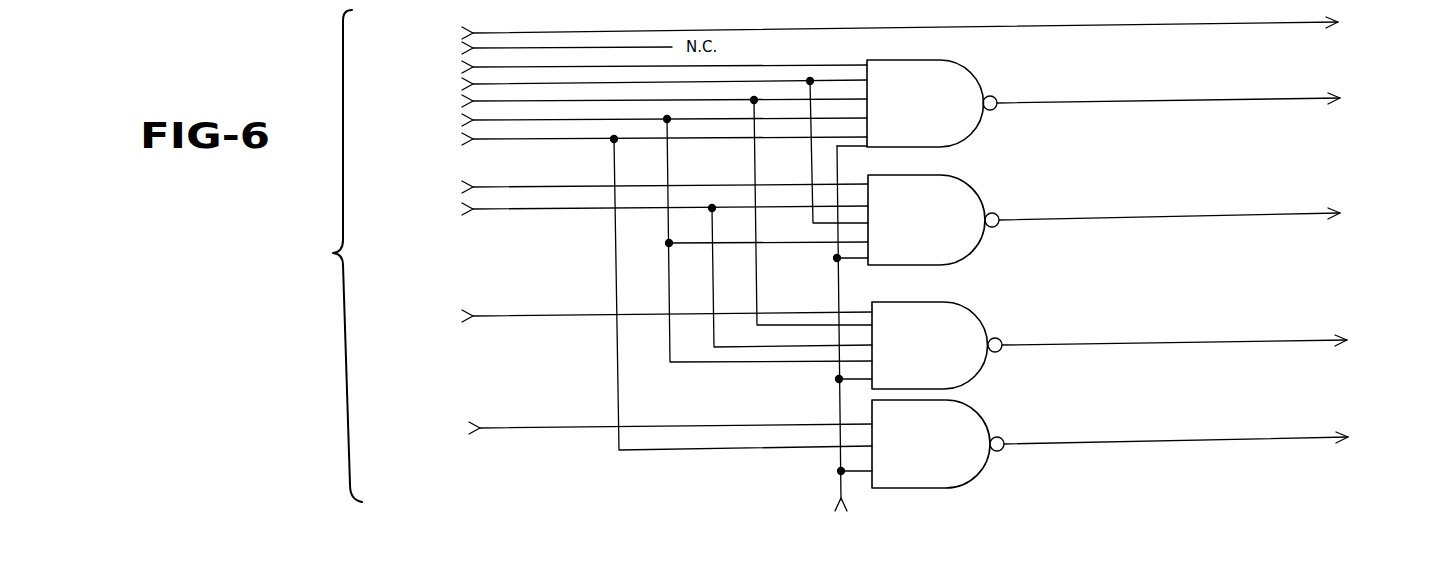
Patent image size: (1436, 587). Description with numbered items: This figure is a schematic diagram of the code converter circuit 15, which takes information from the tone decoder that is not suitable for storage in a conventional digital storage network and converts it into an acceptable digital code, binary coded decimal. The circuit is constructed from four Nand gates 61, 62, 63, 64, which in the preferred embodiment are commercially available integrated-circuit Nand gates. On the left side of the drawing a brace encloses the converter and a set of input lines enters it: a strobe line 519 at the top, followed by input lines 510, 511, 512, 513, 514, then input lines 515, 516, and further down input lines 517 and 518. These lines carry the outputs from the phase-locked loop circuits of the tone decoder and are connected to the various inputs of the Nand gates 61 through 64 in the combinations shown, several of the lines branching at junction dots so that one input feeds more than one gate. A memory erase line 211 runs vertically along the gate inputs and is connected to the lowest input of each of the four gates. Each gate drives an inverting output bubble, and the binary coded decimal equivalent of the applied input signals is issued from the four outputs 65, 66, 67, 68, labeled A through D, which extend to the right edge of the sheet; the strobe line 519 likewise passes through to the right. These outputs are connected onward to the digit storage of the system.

The code converter circuit 15 is at (267, 256).
The strobe line 519 is at (895, 28).
The input line 510 is at (632, 68).
The input line 511 is at (632, 149).
The input line 512 is at (634, 209).
The input line 513 is at (634, 236).
The input line 514 is at (634, 289).
The input line 515 is at (632, 190).
The input line 516 is at (634, 275).
The input line 517 is at (634, 319).
The input line 518 is at (639, 433).
The memory erase line 211 is at (910, 336).
The Nand gate 61 is at (928, 113).
The Nand gate 62 is at (928, 230).
The Nand gate 63 is at (932, 355).
The Nand gate 64 is at (932, 454).
The output 65 is at (1189, 93).
The output 66 is at (1190, 209).
The output 67 is at (1192, 335).
The output 68 is at (1193, 432).